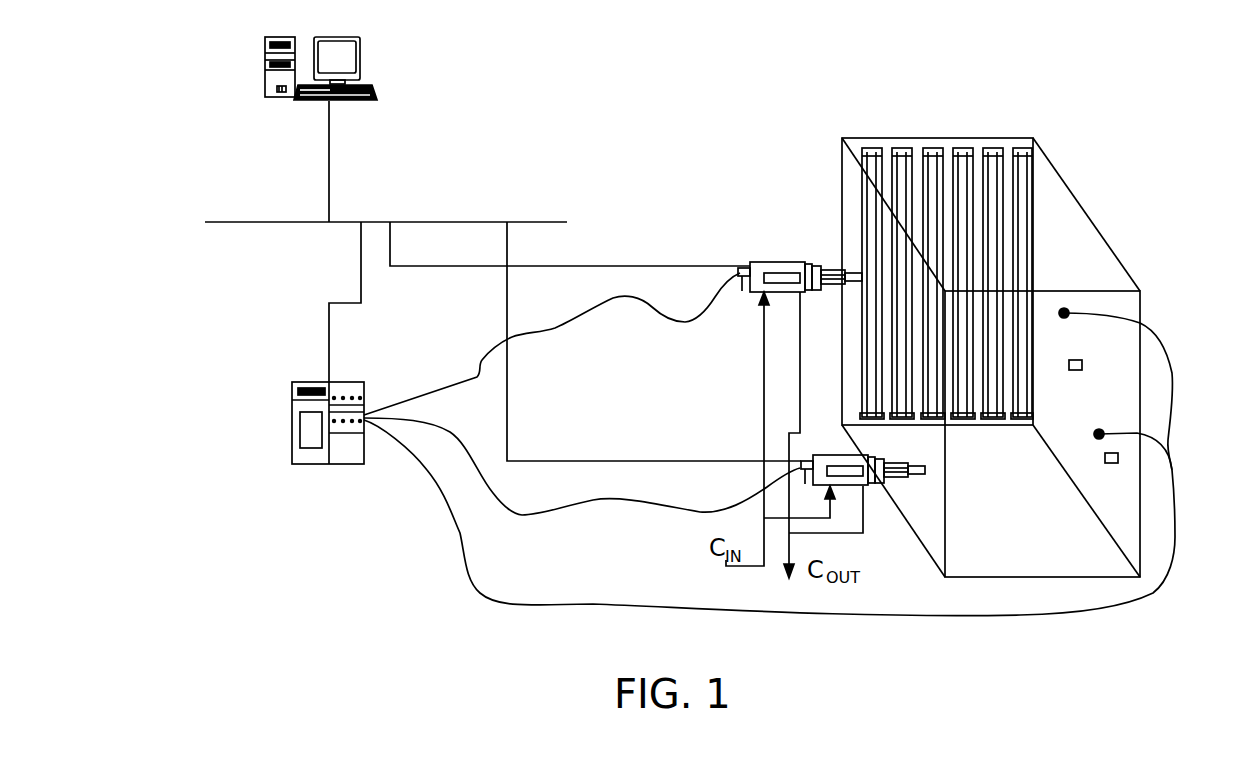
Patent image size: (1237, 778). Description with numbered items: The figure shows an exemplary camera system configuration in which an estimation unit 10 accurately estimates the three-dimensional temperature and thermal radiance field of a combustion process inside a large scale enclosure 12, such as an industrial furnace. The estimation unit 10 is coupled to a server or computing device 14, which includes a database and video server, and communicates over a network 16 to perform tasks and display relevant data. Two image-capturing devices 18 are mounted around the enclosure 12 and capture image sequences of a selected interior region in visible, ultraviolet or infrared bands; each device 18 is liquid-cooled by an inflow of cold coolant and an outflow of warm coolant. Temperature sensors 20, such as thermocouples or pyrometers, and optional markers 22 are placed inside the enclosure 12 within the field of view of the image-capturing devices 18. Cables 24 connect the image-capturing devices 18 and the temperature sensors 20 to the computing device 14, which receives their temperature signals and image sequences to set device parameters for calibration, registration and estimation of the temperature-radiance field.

The estimation unit 10 is at (266, 60).
The enclosure 12 is at (968, 137).
The computing device 14 is at (315, 465).
The network 16 is at (440, 221).
The image-capturing device 18 is at (771, 262).
The temperature sensor 20 is at (1064, 313).
The marker 22 is at (1082, 359).
The cable 24 is at (550, 330).